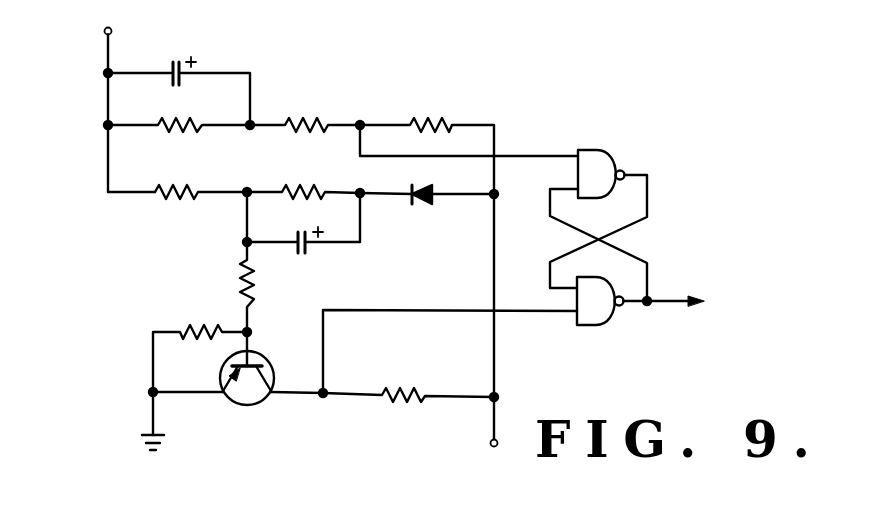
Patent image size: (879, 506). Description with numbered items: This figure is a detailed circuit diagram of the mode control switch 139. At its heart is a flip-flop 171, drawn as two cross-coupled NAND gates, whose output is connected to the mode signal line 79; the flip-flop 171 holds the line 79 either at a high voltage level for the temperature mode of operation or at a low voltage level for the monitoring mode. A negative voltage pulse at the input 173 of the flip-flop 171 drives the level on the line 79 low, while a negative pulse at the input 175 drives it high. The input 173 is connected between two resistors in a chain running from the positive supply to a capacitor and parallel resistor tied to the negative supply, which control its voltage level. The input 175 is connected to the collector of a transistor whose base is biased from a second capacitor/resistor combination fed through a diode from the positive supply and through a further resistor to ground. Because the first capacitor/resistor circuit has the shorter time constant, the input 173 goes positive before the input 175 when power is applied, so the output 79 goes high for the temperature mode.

The mode control switch 139 is at (100, 304).
The flip-flop 171 is at (615, 146).
The input of the flip-flop 173 is at (525, 157).
The input of the flip-flop 175 is at (523, 311).
The mode signal line 79 is at (665, 298).